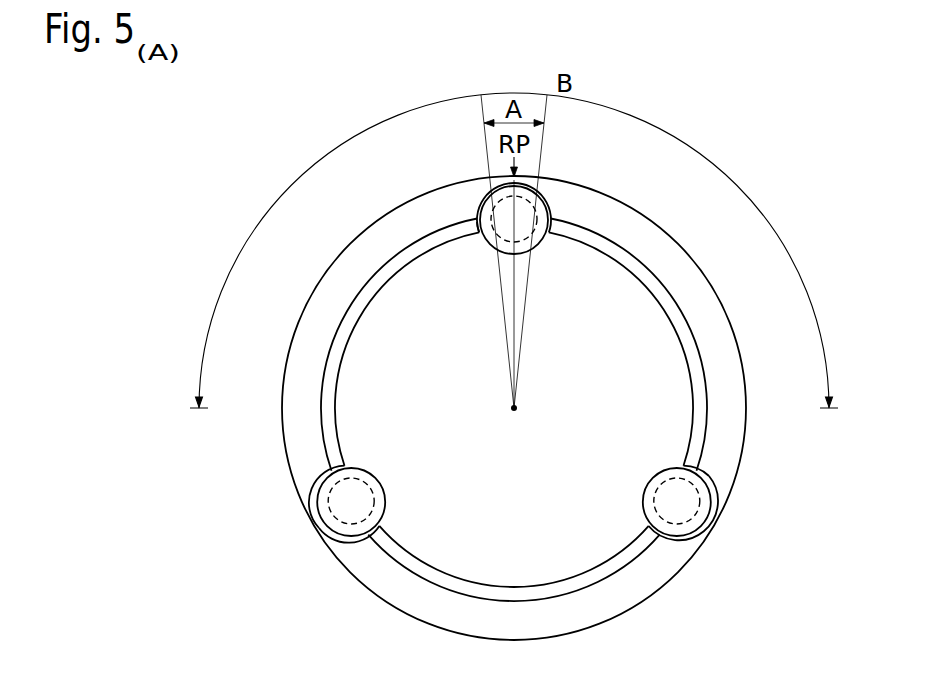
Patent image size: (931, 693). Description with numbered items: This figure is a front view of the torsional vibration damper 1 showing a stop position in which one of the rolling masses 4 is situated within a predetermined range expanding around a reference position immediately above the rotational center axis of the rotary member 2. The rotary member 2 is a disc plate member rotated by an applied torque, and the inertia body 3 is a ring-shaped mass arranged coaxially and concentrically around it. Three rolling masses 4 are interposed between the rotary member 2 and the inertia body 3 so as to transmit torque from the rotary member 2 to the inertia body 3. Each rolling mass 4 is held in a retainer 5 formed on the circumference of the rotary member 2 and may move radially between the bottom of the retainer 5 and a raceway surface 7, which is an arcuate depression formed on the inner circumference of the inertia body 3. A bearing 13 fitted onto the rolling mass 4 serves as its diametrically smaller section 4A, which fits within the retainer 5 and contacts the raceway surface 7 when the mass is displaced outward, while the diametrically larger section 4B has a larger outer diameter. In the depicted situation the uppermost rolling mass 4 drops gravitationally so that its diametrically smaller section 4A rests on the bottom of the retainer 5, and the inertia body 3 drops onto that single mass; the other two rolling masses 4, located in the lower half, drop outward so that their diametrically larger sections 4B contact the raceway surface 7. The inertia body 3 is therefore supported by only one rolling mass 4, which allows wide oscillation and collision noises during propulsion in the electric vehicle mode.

The torsional vibration damper 1 is at (773, 134).
The rotary member 2 is at (675, 408).
The inertia body 3 is at (733, 434).
The rolling mass 4 is at (516, 406).
The diametrically smaller section 4A is at (524, 198).
The diametrically larger section 4B is at (556, 235).
The retainer 5 is at (477, 226).
The raceway surface 7 is at (549, 206).
The bearing 13 is at (514, 360).